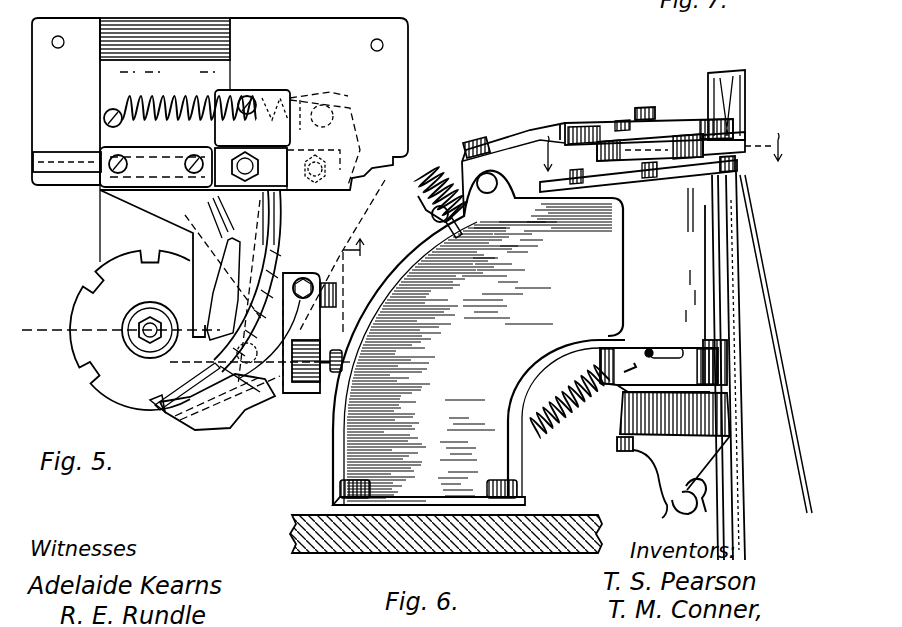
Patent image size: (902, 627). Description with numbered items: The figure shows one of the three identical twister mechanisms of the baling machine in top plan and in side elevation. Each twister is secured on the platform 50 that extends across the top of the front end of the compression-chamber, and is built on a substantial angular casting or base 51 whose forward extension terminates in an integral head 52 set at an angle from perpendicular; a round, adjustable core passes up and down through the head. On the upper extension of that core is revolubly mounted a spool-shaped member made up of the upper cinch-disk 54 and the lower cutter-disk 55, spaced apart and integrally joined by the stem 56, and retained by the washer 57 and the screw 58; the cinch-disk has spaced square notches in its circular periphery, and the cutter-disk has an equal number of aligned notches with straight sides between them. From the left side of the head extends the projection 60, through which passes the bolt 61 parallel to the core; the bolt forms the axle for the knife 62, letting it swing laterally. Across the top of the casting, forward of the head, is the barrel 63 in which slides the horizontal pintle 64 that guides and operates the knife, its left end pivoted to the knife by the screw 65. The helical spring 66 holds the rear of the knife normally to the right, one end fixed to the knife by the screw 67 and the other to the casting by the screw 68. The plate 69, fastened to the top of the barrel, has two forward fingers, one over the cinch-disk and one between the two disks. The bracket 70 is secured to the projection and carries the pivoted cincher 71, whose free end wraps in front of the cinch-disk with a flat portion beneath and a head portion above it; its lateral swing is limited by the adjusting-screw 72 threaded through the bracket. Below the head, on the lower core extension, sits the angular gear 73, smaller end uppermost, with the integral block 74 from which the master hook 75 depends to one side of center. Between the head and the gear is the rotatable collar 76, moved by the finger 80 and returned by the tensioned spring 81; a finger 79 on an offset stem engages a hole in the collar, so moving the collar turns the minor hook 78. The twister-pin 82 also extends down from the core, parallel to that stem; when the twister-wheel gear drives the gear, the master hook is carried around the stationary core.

In FIG. 6, the platform 50 is at (315, 555).
In FIG. 5, the base 51 is at (232, 44).
In FIG. 6, the base 51 is at (479, 338).
In FIG. 6, the head 52 is at (740, 526).
In FIG. 5, the cinch-disk 54 is at (103, 392).
In FIG. 6, the cinch-disk 54 is at (698, 118).
In FIG. 6, the cutter-disk 55 is at (738, 166).
In FIG. 6, the stem 56 is at (672, 177).
In FIG. 5, the washer 57 is at (64, 372).
In FIG. 6, the washer 57 is at (668, 116).
In FIG. 5, the screw 58 is at (144, 346).
In FIG. 6, the screw 58 is at (640, 106).
In FIG. 5, the projection 60 is at (303, 276).
In FIG. 5, the bolt 61 is at (262, 396).
In FIG. 5, the knife 62 is at (288, 94).
In FIG. 6, the knife 62 is at (420, 205).
In FIG. 6, the barrel 63 is at (462, 176).
In FIG. 5, the pintle 64 is at (66, 174).
In FIG. 6, the pintle 64 is at (488, 236).
In FIG. 5, the screw 65 is at (366, 150).
In FIG. 6, the screw 65 is at (480, 138).
In FIG. 5, the helical spring 66 is at (188, 94).
In FIG. 6, the helical spring 66 is at (420, 178).
In FIG. 5, the screw 67 is at (248, 96).
In FIG. 5, the screw 68 is at (104, 121).
In FIG. 6, the screw 68 is at (432, 224).
In FIG. 5, the plate 69 is at (190, 348).
In FIG. 6, the plate 69 is at (540, 134).
In FIG. 5, the bracket 70 is at (306, 386).
In FIG. 5, the cincher 71 is at (212, 430).
In FIG. 6, the cincher 71 is at (747, 100).
In FIG. 5, the adjusting-screw 72 is at (334, 349).
In FIG. 6, the angular gear 73 is at (622, 420).
In FIG. 6, the block 74 is at (616, 448).
In FIG. 6, the master hook 75 is at (656, 492).
In FIG. 6, the collar 76 is at (728, 366).
In FIG. 6, the minor hook 78 is at (702, 506).
In FIG. 6, the finger 79 is at (656, 348).
In FIG. 6, the finger 80 is at (612, 350).
In FIG. 6, the spring 81 is at (556, 432).
In FIG. 6, the twister-pin 82 is at (676, 506).